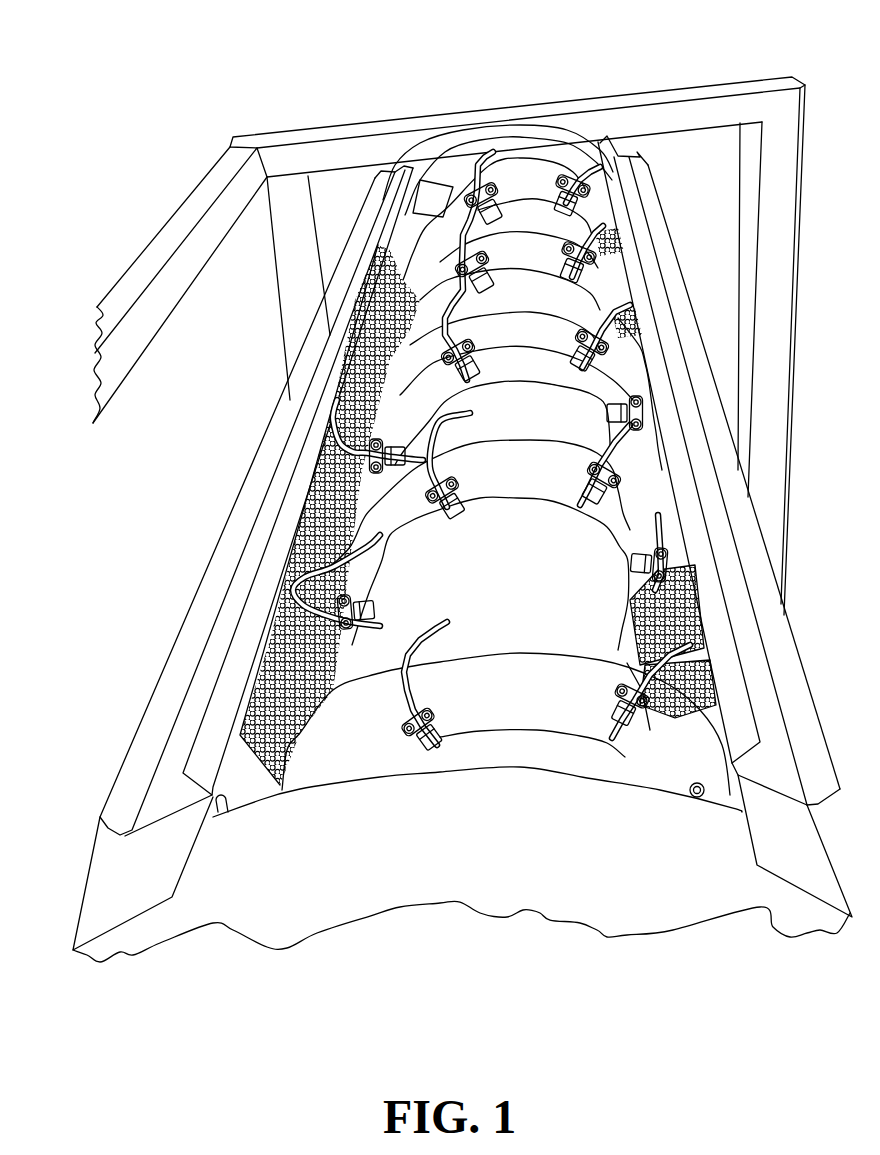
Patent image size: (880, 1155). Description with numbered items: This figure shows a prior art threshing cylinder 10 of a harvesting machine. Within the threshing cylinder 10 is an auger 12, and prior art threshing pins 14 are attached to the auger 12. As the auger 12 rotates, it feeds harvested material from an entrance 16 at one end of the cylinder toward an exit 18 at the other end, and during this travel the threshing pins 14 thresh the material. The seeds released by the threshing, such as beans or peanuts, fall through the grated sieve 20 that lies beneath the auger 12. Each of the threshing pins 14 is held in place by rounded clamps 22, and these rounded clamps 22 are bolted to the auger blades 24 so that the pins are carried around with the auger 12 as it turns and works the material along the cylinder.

The threshing cylinder 10 is at (125, 163).
The auger 12 is at (325, 515).
The threshing pins 14 is at (453, 613).
The entrance 16 is at (547, 897).
The exit 18 is at (527, 158).
The grated sieve 20 is at (283, 703).
The rounded clamps 22 is at (440, 717).
The auger blades 24 is at (495, 677).